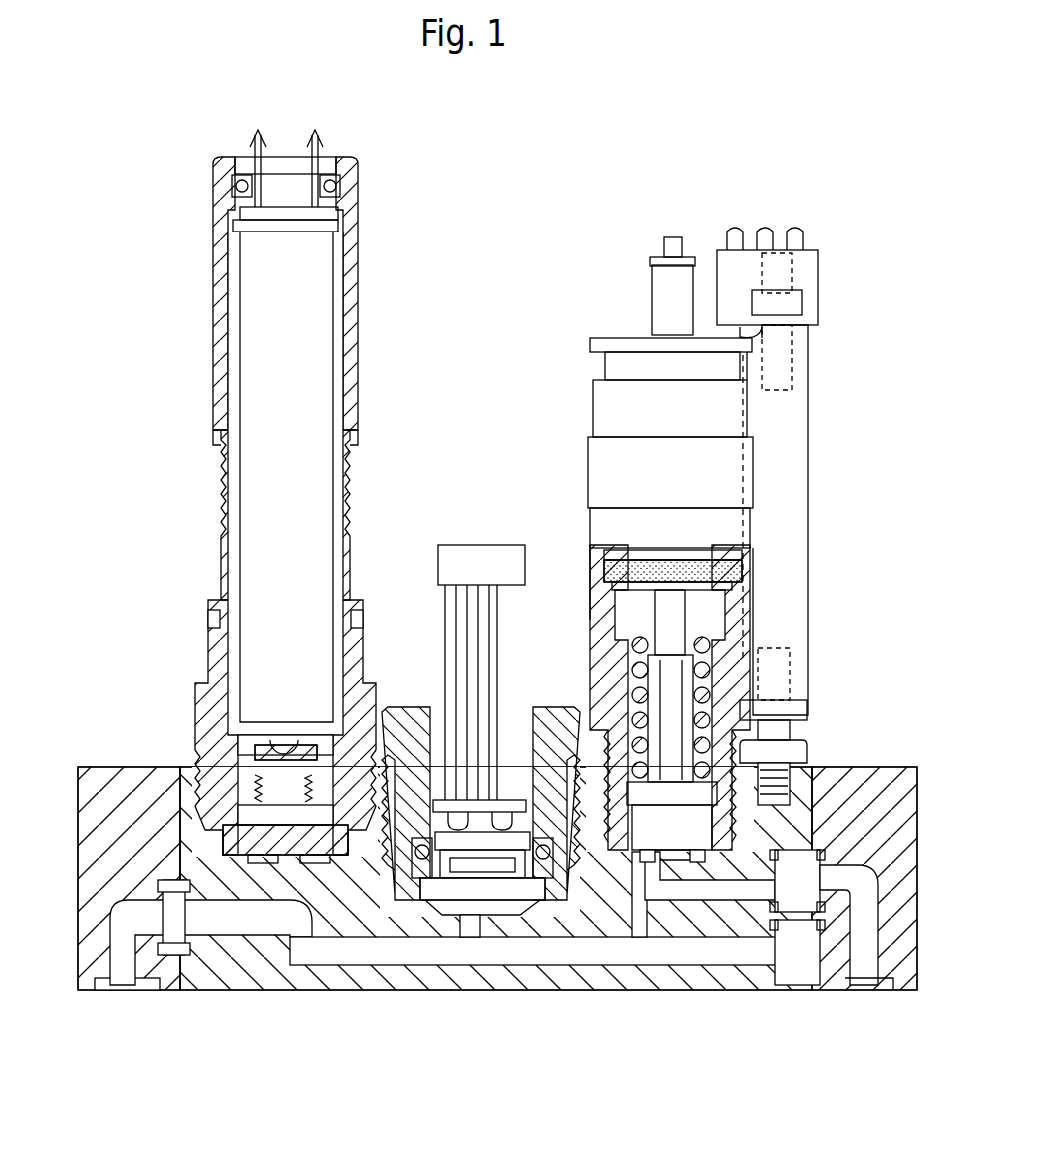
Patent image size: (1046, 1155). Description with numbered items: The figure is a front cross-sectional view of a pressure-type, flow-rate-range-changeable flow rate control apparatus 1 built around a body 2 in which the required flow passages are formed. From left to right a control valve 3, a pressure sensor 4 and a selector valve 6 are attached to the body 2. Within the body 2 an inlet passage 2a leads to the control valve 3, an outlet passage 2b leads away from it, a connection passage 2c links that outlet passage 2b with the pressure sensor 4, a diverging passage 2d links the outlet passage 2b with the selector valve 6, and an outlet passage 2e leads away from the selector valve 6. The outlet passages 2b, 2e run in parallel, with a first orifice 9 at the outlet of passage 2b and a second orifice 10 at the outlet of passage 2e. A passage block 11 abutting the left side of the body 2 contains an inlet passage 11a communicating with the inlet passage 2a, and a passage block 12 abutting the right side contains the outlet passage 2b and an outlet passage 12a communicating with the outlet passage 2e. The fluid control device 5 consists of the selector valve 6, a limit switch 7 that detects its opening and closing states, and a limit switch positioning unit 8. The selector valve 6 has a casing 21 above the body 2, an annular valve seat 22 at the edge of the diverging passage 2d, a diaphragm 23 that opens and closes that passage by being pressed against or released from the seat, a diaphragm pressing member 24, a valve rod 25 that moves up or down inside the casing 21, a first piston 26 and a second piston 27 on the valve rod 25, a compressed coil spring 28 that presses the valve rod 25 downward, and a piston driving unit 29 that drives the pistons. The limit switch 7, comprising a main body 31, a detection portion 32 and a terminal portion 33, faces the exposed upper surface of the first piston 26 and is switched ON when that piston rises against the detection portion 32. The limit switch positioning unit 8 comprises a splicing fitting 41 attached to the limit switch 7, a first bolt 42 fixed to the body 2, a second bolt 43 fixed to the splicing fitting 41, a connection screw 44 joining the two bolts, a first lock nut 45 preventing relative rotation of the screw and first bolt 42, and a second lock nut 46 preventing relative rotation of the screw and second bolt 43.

The flow rate control apparatus 1 is at (872, 600).
The body 2 is at (550, 990).
The inlet passage 2a is at (232, 928).
The outlet passage 2b is at (350, 965).
The connection passage 2c is at (480, 925).
The diverging passage 2d is at (640, 937).
The outlet passage 2e is at (648, 862).
The control valve 3 is at (353, 570).
The pressure sensor 4 is at (450, 915).
The fluid control device 5 is at (704, 512).
The selector valve 6 is at (590, 570).
The limit switch 7 is at (806, 257).
The limit switch positioning unit 8 is at (753, 500).
The first orifice 9 is at (795, 985).
The second orifice 10 is at (800, 912).
The passage block 11 is at (64, 996).
The inlet passage 11a is at (150, 958).
The passage block 12 is at (900, 790).
The outlet passage 12a is at (870, 985).
The casing 21 is at (590, 628).
The annular valve seat 22 is at (690, 900).
The diaphragm 23 is at (700, 862).
The diaphragm pressing member 24 is at (700, 855).
The valve rod 25 is at (660, 690).
The first piston 26 is at (590, 345).
The second piston 27 is at (630, 560).
The compressed coil spring 28 is at (705, 650).
The piston driving unit 29 is at (652, 285).
The main body 31 is at (802, 312).
The detection portion 32 is at (745, 330).
The terminal portion 33 is at (797, 230).
The splicing fitting 41 is at (818, 262).
The first bolt 42 is at (790, 680).
The second bolt 43 is at (792, 350).
The connection screw 44 is at (808, 555).
The first lock nut 45 is at (780, 730).
The second lock nut 46 is at (810, 415).